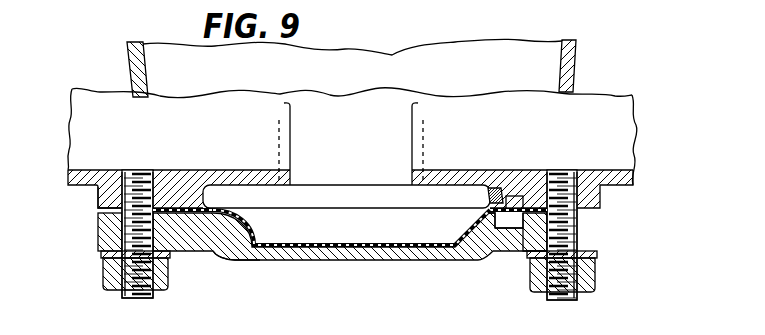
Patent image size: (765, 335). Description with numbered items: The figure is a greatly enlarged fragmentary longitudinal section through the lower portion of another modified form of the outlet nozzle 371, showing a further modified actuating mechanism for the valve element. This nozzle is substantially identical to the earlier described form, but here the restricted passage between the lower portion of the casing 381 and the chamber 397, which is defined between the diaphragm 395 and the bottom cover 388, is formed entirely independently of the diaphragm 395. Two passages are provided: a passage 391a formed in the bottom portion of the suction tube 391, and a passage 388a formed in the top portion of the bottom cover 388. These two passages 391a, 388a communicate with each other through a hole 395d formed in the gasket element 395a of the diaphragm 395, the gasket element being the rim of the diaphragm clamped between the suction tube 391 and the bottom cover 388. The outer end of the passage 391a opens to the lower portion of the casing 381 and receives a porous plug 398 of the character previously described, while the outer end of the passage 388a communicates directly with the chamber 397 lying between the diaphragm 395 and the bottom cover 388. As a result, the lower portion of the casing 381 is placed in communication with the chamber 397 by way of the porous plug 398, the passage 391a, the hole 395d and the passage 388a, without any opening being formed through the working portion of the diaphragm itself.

The outlet nozzle 371 is at (95, 188).
The casing 381 is at (577, 62).
The bottom cover 388 is at (362, 260).
The passage 388a is at (523, 258).
The suction tube 391 is at (640, 121).
The passage 391a is at (524, 198).
The diaphragm 395 is at (227, 234).
The gasket element 395a is at (183, 205).
The hole 395d is at (510, 252).
The chamber 397 is at (248, 259).
The porous plug 398 is at (497, 190).